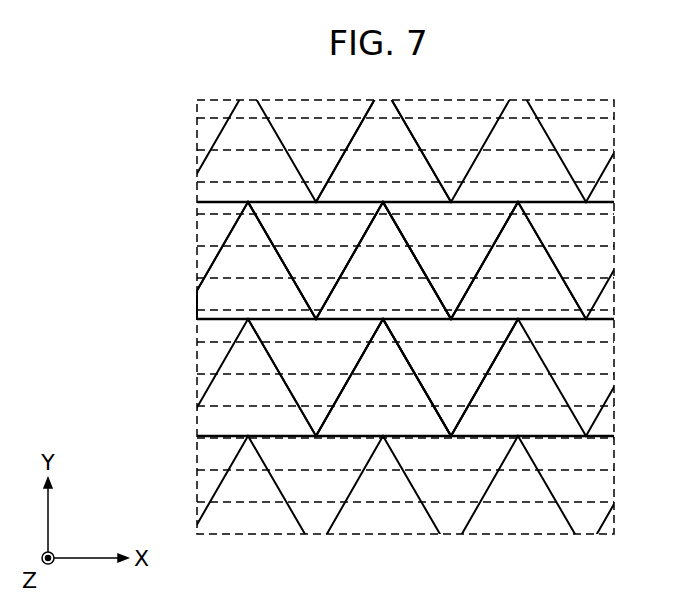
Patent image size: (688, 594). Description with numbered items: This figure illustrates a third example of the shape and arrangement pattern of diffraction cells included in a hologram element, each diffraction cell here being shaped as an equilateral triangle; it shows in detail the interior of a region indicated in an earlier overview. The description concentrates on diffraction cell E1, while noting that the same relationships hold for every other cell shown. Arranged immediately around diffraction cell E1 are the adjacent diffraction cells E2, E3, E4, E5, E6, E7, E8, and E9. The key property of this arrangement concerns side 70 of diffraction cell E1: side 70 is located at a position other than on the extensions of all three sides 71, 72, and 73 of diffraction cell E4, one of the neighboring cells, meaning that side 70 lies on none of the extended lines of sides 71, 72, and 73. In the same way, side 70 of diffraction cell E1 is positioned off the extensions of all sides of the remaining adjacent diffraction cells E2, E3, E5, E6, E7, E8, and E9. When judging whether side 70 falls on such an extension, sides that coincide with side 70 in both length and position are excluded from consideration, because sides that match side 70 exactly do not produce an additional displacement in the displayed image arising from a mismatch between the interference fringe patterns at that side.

The side 70 is at (399, 228).
The side 71 is at (502, 319).
The side 72 is at (493, 365).
The side 73 is at (428, 398).
The diffraction cell E1 is at (397, 295).
The diffraction cell E2 is at (467, 255).
The diffraction cell E3 is at (533, 293).
The diffraction cell E4 is at (466, 370).
The diffraction cell E5 is at (397, 408).
The diffraction cell E6 is at (332, 370).
The diffraction cell E7 is at (262, 295).
The diffraction cell E8 is at (330, 255).
The diffraction cell E9 is at (398, 175).